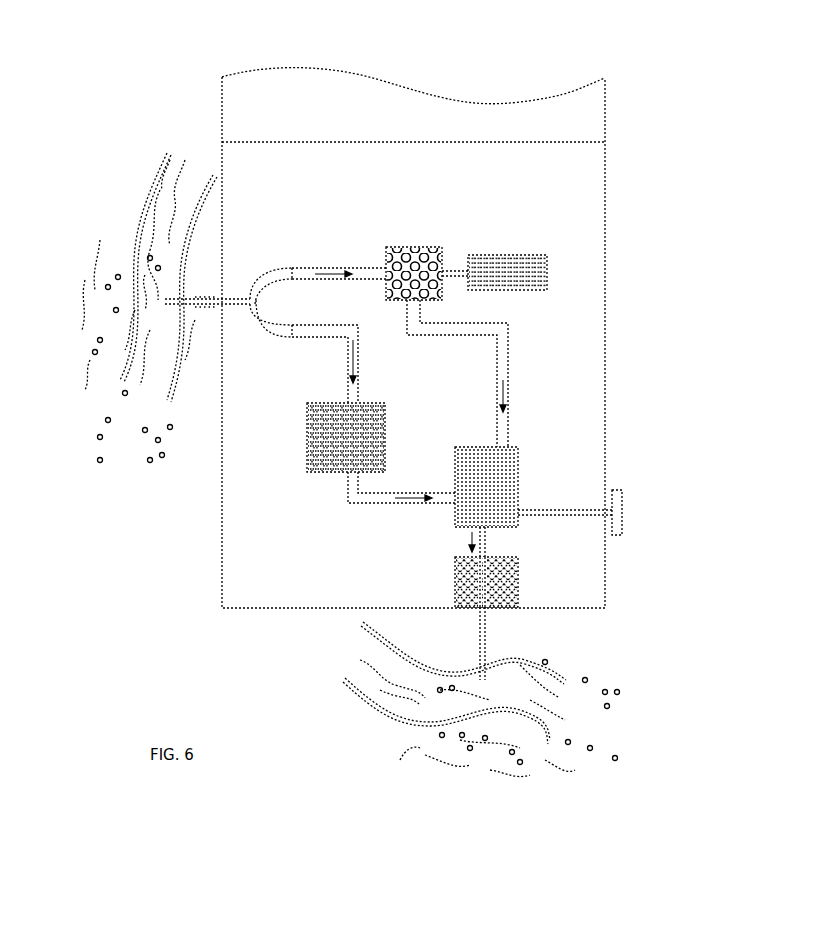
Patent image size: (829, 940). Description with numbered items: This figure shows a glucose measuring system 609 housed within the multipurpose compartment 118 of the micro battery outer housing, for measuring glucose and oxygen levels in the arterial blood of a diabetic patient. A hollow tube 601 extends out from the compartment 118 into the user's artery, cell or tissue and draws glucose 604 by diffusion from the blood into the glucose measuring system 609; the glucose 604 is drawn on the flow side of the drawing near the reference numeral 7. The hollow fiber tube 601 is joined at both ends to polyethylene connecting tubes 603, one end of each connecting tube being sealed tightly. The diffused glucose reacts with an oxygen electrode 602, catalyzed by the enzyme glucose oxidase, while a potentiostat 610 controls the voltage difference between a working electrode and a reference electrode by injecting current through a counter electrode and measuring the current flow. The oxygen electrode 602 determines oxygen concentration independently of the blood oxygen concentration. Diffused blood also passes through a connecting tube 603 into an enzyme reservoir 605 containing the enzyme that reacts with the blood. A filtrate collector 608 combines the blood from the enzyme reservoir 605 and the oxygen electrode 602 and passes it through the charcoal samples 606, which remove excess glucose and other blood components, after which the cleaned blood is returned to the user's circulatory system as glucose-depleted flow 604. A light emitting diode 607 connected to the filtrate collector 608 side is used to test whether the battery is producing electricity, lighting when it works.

The multipurpose compartment 118 is at (189, 30).
The glucose measuring system 609 is at (612, 123).
The hollow tube 601 is at (196, 294).
The flow sensor 7 is at (203, 306).
The polyethylene connecting tube 603 is at (262, 330).
The oxygen electrode 602 is at (413, 247).
The potentiostat 610 is at (536, 255).
The enzyme reservoir 605 is at (307, 428).
The filtrate collector 608 is at (518, 462).
The charcoal samples 606 is at (518, 572).
The light emitting diode 607 is at (622, 530).
The glucose 604 is at (105, 291).